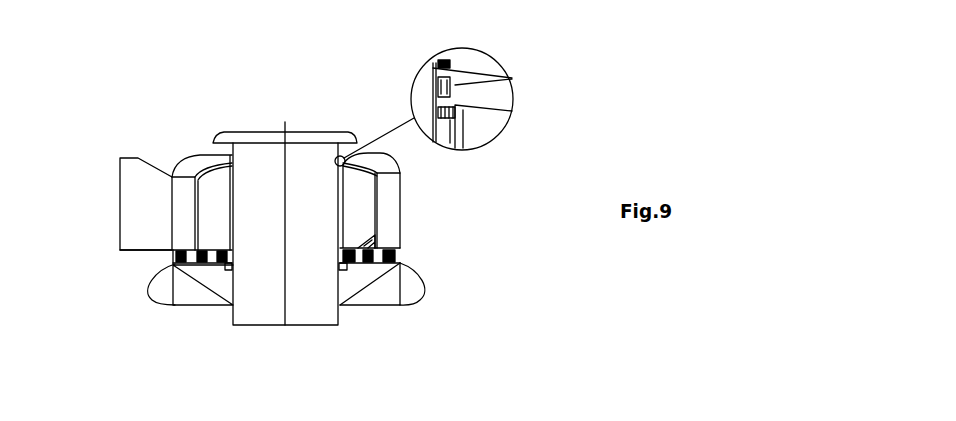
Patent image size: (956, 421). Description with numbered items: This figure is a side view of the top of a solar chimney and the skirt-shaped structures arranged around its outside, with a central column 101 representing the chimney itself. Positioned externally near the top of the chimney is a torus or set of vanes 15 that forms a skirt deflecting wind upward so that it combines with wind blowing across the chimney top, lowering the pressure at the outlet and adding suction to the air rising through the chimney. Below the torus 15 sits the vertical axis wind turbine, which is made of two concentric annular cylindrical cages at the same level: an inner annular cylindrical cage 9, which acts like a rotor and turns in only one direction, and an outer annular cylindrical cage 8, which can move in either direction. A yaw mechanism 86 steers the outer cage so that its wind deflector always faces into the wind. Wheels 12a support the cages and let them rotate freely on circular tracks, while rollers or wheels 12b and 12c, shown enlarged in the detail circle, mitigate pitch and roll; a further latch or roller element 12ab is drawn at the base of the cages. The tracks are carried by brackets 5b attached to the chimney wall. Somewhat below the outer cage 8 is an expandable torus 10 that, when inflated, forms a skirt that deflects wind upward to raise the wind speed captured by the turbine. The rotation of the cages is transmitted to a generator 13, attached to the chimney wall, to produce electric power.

The yaw mechanism 86 is at (146, 204).
The central shaft 101 is at (285, 223).
The torus or set of vanes 15 is at (353, 132).
The inner annular cylindrical cage 9 is at (367, 200).
The outer annular cylindrical cage 8 is at (388, 210).
The latch element 12ab is at (378, 232).
The wheels 12a is at (173, 260).
The rollers/wheels 12b is at (446, 62).
The rollers/wheels 12c is at (468, 150).
The generator 13 is at (224, 271).
The expandable torus 10 is at (427, 290).
The brackets 5b is at (371, 287).